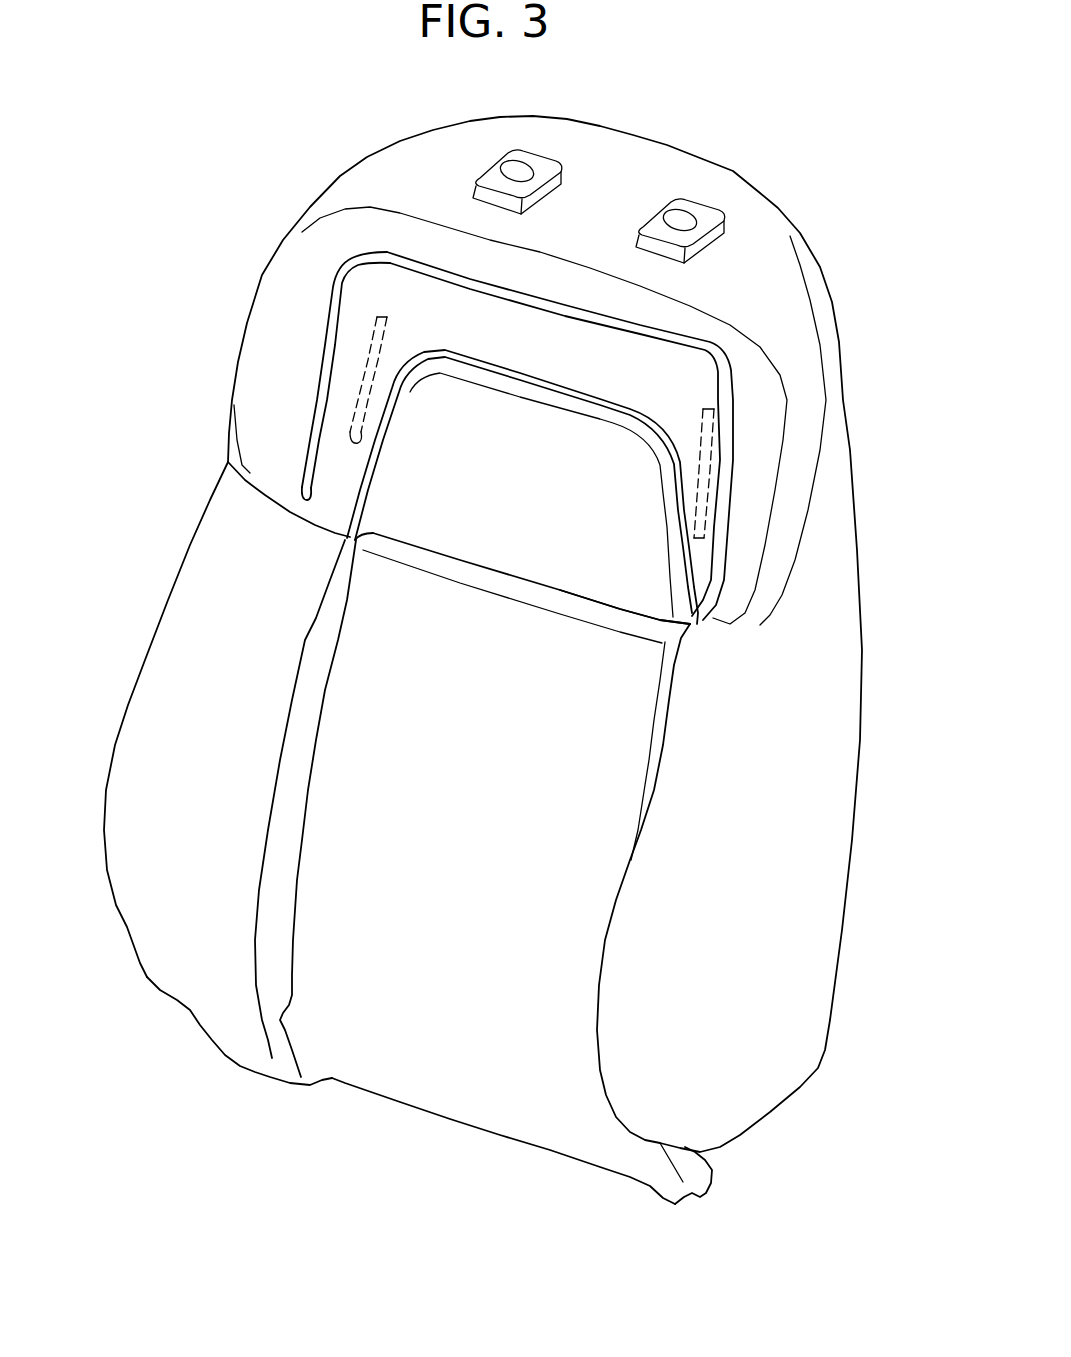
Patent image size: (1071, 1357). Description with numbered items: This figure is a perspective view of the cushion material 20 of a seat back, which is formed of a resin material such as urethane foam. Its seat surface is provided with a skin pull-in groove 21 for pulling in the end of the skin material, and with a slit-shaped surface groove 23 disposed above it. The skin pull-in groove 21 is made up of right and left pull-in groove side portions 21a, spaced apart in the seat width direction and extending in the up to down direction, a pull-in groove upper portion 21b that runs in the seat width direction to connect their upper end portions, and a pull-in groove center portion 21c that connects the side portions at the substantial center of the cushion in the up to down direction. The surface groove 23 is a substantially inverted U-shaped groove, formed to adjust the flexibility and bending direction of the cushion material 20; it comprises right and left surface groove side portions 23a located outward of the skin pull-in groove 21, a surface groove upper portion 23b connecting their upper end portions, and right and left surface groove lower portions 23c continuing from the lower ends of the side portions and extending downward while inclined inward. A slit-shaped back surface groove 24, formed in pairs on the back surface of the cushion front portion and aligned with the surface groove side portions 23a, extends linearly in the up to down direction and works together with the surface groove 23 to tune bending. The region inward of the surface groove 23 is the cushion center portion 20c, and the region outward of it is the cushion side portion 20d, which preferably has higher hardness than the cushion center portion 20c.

The cushion material 20 is at (222, 153).
The cushion center portion 20c is at (223, 1077).
The cushion side portion 20d is at (63, 1027).
The skin pull-in groove 21 is at (485, 686).
The pull-in groove side portion 21a is at (310, 680).
The pull-in groove upper portion 21b is at (640, 417).
The pull-in groove center portion 21c is at (604, 600).
The surface groove 23 is at (165, 246).
The surface groove side portion 23a is at (330, 374).
The surface groove upper portion 23b is at (450, 268).
The surface groove lower portion 23c is at (303, 492).
The back surface groove 24 is at (713, 457).